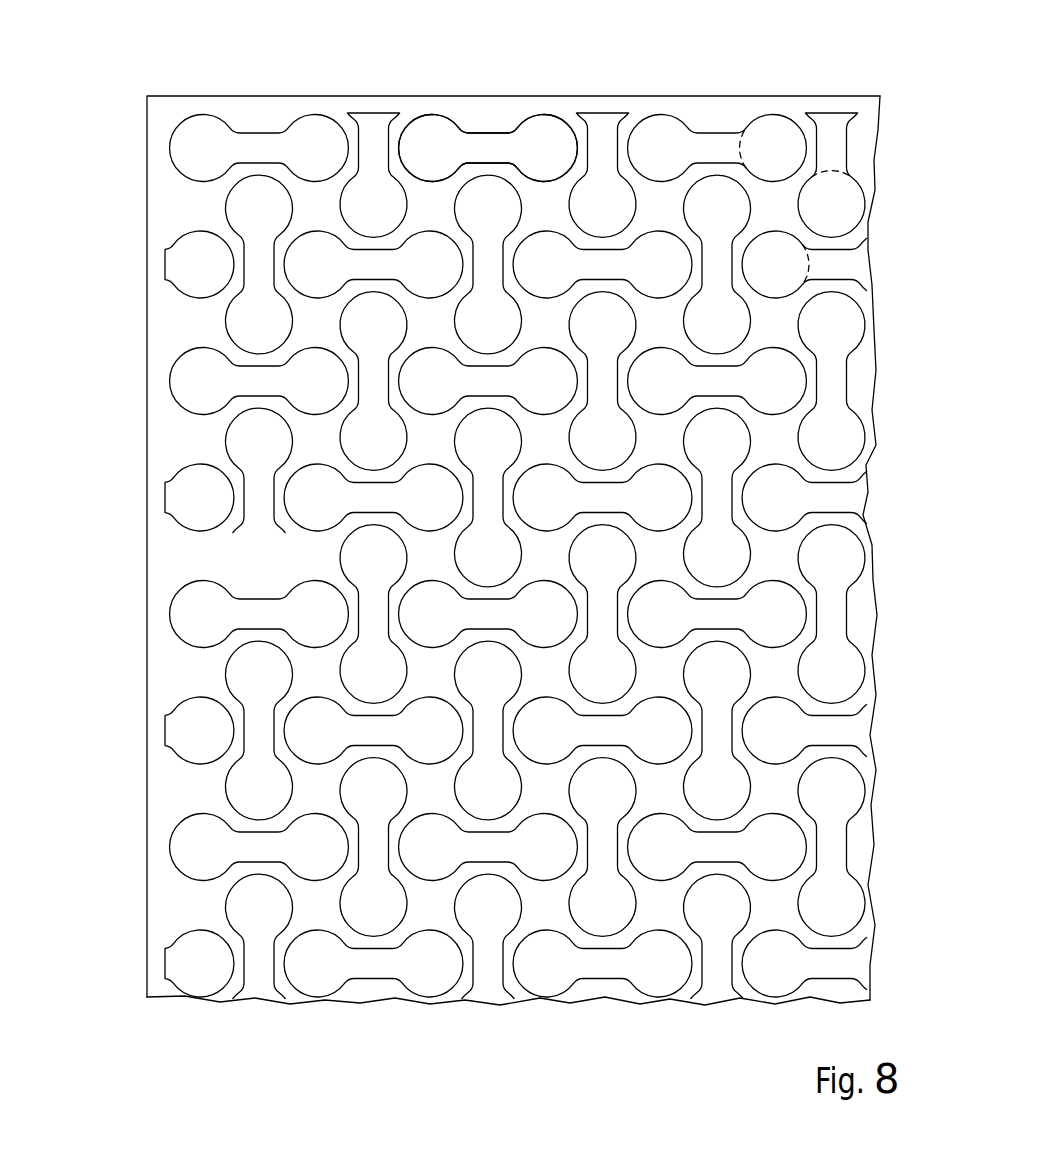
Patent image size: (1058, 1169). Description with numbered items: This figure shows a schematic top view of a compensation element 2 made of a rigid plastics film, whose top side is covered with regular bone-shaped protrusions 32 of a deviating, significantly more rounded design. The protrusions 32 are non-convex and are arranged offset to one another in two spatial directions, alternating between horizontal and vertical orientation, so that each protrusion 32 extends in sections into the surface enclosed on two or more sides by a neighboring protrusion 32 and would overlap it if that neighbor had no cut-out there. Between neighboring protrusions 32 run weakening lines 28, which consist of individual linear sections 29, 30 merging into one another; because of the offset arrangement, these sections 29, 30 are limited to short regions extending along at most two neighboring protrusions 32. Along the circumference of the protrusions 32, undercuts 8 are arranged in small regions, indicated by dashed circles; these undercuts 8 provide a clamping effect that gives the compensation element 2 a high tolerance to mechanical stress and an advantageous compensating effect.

The compensation element 2 is at (707, 112).
The undercuts 8 is at (776, 180).
The weakening lines 28 is at (632, 120).
The section of weakening line 29 is at (377, 240).
The section of weakening line 30 is at (278, 272).
The bone-shaped protrusions 32 is at (302, 143).